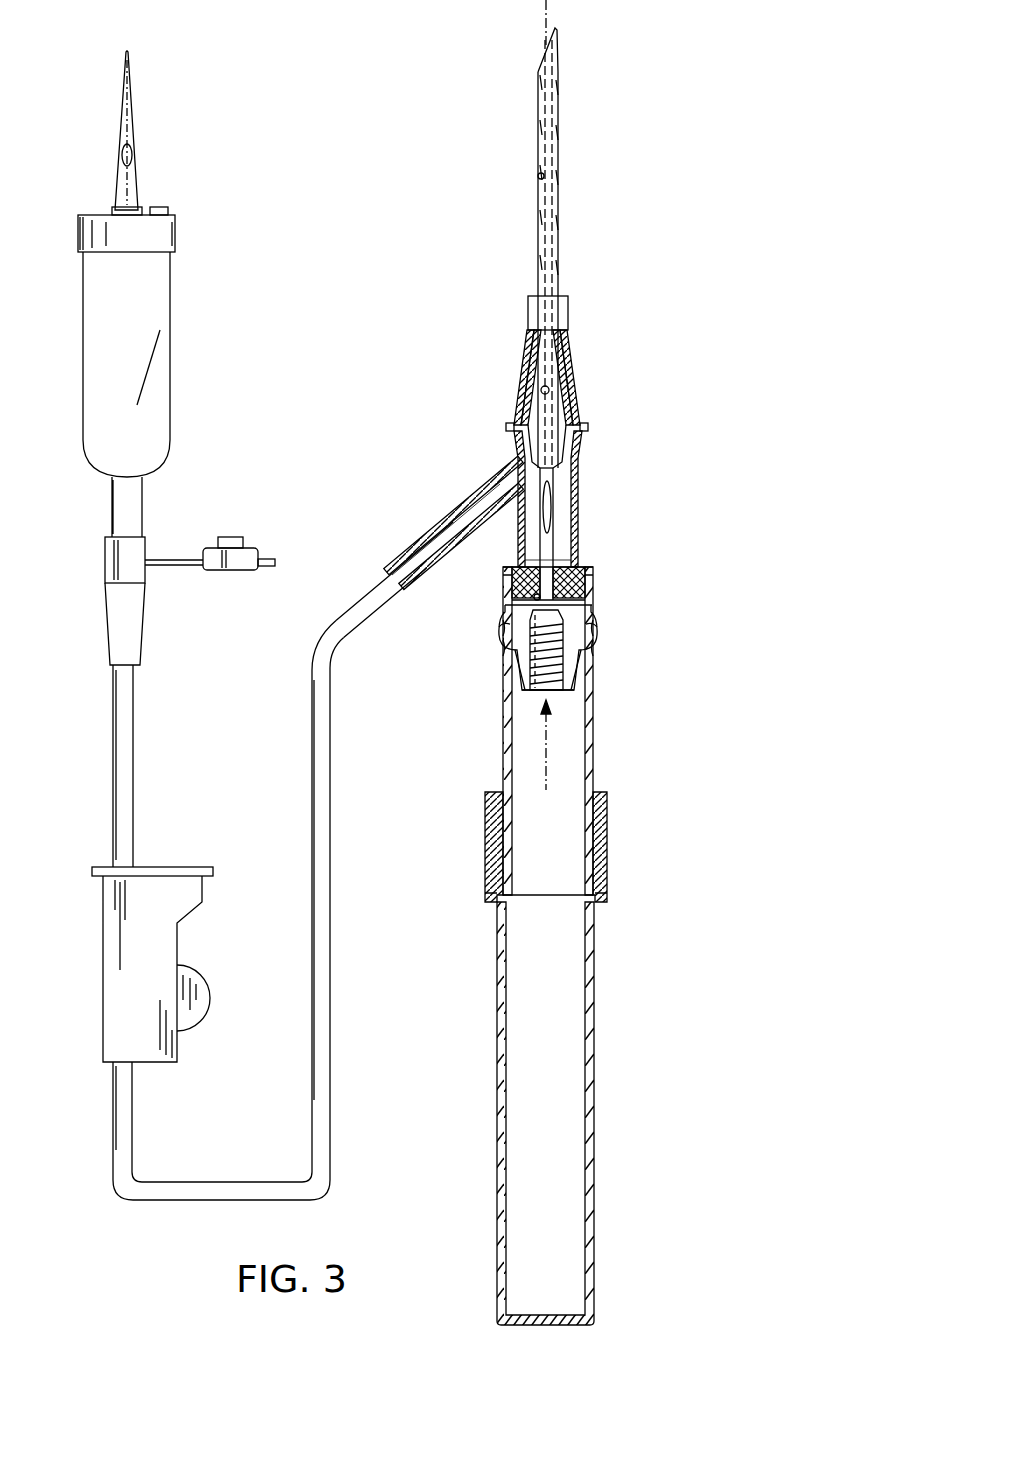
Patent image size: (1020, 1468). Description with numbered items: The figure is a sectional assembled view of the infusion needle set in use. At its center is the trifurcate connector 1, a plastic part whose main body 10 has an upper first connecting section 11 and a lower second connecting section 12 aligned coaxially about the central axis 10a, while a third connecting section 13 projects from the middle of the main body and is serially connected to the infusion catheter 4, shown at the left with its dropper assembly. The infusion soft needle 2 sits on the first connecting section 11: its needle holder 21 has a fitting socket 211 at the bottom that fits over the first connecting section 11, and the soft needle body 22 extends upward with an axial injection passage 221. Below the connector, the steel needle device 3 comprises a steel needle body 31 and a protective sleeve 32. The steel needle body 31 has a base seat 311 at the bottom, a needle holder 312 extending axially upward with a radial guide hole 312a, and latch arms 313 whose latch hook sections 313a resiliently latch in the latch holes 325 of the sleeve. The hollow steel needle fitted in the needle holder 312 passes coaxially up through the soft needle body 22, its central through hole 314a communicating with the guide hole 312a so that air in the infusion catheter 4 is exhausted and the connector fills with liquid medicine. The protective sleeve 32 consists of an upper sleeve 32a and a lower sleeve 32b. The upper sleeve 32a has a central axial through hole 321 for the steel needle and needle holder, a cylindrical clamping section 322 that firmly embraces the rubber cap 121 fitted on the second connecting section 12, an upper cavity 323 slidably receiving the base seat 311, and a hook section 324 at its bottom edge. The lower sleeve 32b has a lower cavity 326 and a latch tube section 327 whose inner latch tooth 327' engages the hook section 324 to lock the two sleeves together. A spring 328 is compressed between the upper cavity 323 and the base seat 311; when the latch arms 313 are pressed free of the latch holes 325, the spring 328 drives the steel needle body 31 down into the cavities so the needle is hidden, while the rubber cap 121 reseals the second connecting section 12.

The trifurcate connector 1 is at (478, 483).
The infusion soft needle 2 is at (522, 312).
The steel needle device 3 is at (568, 946).
The infusion catheter 4 is at (343, 610).
The main body 10 is at (550, 498).
The central axis 10a is at (545, 8).
The first connecting section 11 is at (563, 382).
The second connecting section 12 is at (575, 517).
The third connecting section 13 is at (427, 528).
The needle holder 21 is at (522, 372).
The soft needle body 22 is at (558, 244).
The rubber cap 121 is at (578, 548).
The fitting socket 211 is at (541, 391).
The axial injection passage 221 is at (538, 176).
The steel needle body 31 is at (541, 697).
The protective sleeve 32 is at (566, 946).
The upper sleeve 32a is at (542, 749).
The lower sleeve 32b is at (569, 1096).
The base seat 311 is at (560, 695).
The needle holder 312 is at (587, 572).
The radial guide hole 312a is at (577, 468).
The latch arm 313 is at (518, 673).
The latch hook section 313a is at (508, 636).
The central through hole 314a is at (556, 106).
The central axial through hole 321 is at (534, 595).
The cylindrical clamping section 322 is at (592, 567).
The upper cavity 323 is at (512, 768).
The hook section 324 is at (488, 903).
The latch hole 325 is at (502, 650).
The lower cavity 326 is at (505, 1050).
The latch tube section 327 is at (497, 847).
The latch tooth 327' is at (496, 879).
The spring 328 is at (533, 690).